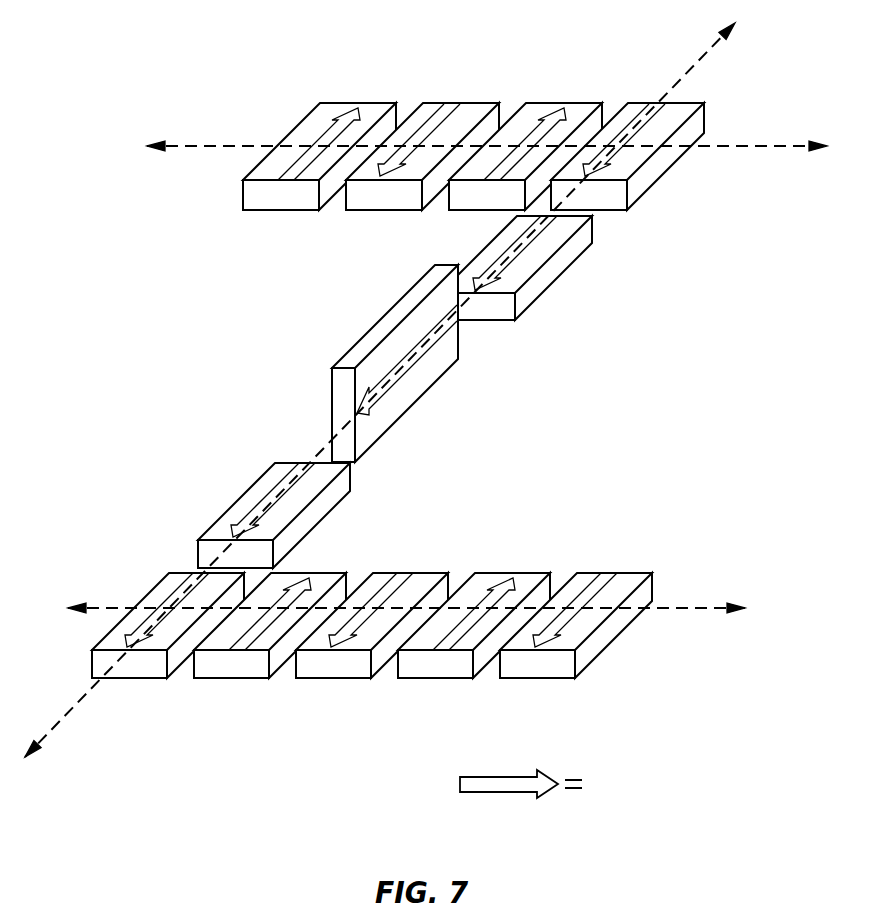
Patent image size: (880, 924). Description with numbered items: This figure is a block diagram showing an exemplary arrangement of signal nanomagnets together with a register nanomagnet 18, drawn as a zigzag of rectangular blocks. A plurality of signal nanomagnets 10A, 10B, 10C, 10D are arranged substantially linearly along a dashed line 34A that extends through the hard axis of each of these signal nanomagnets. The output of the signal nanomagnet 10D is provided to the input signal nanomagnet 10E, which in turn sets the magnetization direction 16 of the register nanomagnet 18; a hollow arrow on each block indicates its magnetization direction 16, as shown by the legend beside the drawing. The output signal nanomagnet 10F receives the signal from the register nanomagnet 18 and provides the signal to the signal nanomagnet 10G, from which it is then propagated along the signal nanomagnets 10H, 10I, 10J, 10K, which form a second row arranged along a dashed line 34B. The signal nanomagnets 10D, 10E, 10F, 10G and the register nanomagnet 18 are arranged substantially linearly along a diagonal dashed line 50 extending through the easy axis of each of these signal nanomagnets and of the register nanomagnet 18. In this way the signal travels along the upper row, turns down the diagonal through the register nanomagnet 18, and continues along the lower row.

The signal nanomagnet 10A is at (333, 103).
The signal nanomagnet 10B is at (438, 103).
The signal nanomagnet 10C is at (540, 103).
The signal nanomagnet 10D is at (646, 103).
The input signal nanomagnet 10E is at (560, 278).
The output signal nanomagnet 10F is at (328, 515).
The signal nanomagnet 10G is at (128, 680).
The signal nanomagnet 10H is at (230, 680).
The signal nanomagnet 10I is at (323, 680).
The signal nanomagnet 10J is at (428, 678).
The signal nanomagnet 10K is at (535, 678).
The register nanomagnet 18 is at (420, 398).
The line 34A is at (762, 145).
The line 34B is at (698, 608).
The line 50 is at (50, 727).
The magnetization direction 16 is at (630, 786).